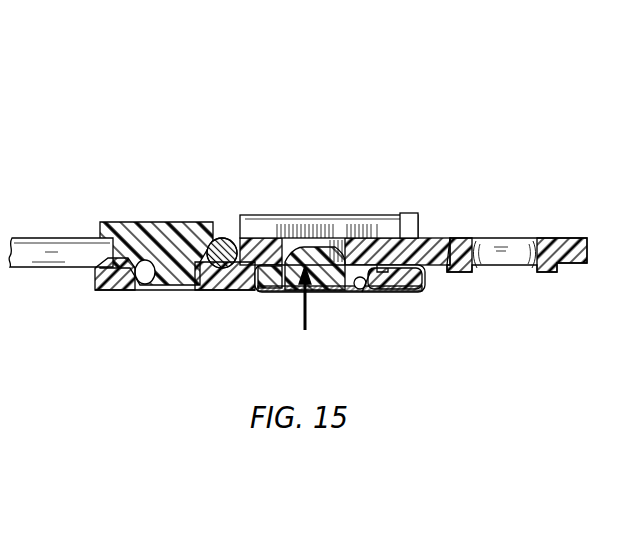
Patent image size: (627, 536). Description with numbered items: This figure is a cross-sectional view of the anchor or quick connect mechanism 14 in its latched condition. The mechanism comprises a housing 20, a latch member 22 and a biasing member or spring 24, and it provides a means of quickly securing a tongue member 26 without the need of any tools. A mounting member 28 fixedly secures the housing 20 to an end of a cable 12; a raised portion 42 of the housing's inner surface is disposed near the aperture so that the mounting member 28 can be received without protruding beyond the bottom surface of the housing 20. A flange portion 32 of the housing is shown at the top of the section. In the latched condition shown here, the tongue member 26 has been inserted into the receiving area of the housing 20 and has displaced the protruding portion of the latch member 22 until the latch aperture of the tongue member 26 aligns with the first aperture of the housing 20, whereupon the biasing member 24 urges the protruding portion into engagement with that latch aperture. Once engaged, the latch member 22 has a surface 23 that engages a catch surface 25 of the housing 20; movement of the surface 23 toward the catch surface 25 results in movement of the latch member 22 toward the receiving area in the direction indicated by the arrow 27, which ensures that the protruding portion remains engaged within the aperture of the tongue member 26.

The cable 12 is at (28, 236).
The anchor or quick connect mechanism 14 is at (399, 89).
The housing 20 is at (272, 214).
The latch member 22 is at (322, 297).
The surface 23 is at (355, 297).
The biasing member or spring 24 is at (427, 283).
The catch surface 25 is at (377, 293).
The tongue member 26 is at (571, 232).
The arrow 27 is at (304, 303).
The mounting member 28 is at (118, 222).
The flange 32 is at (400, 212).
The raised portion 42 is at (148, 292).